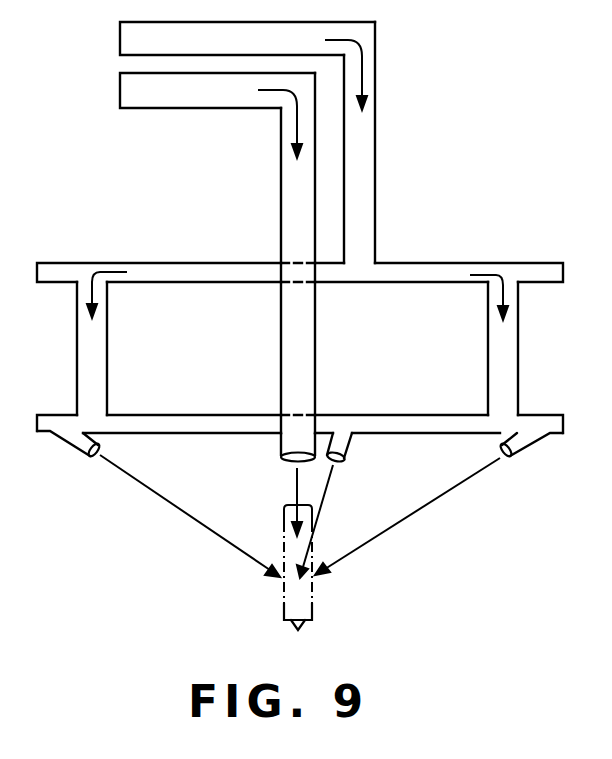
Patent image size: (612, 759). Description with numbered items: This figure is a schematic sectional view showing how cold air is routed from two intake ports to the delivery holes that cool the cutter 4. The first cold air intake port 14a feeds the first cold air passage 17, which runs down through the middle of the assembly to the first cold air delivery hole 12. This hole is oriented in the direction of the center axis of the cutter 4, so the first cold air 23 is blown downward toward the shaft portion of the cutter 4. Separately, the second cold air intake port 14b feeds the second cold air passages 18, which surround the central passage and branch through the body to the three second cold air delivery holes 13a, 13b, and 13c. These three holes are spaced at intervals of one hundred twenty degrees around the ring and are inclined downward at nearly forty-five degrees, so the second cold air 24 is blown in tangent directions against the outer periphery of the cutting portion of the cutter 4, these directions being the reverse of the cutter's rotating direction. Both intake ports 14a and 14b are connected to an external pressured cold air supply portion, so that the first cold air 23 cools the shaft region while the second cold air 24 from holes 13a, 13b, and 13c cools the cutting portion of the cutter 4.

The cutter 4 is at (312, 612).
The first cold air delivery hole 12 is at (288, 466).
The second cold air delivery hole 13a is at (92, 462).
The second cold air delivery hole 13b is at (344, 463).
The second cold air delivery hole 13c is at (492, 462).
The first cold air intake port 14a is at (130, 88).
The second cold air intake port 14b is at (130, 36).
The first cold air passage 17 is at (297, 205).
The second cold air passage 18 is at (360, 212).
The first cold air 23 is at (298, 122).
The second cold air 24 is at (365, 76).